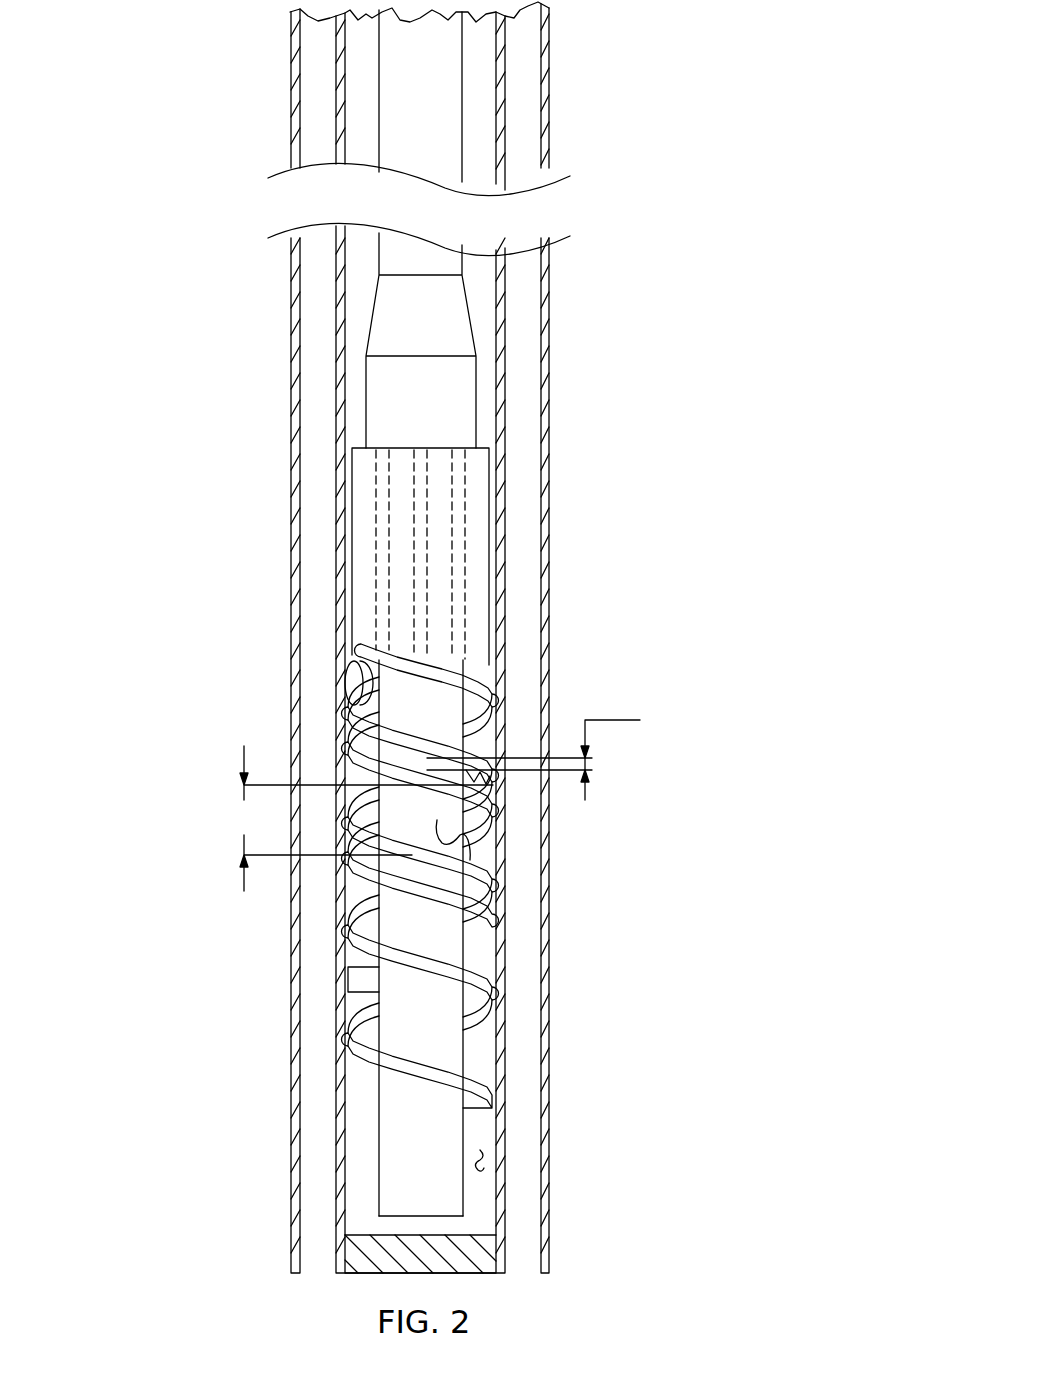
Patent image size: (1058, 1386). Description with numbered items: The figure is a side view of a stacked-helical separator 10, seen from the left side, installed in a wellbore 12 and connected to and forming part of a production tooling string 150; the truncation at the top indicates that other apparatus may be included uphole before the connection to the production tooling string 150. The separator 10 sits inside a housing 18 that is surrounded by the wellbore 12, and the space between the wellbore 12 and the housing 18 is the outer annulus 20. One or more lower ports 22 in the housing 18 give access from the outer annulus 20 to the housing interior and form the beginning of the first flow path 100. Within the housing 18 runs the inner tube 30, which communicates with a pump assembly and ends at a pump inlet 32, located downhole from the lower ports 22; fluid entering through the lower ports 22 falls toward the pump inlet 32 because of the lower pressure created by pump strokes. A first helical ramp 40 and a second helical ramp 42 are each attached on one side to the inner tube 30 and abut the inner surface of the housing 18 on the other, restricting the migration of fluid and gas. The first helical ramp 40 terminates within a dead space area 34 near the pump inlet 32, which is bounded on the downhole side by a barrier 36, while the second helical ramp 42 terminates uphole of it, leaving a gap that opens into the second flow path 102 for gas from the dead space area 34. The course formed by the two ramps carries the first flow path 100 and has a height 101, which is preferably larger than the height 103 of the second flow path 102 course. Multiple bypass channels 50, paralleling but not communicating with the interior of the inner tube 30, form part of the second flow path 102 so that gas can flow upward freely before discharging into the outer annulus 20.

The stacked-helical separator 10 is at (692, 752).
The wellbore 12 is at (550, 556).
The housing 18 is at (507, 692).
The outer annulus 20 is at (323, 489).
The lower ports 22 is at (350, 684).
The inner tube 30 is at (420, 1030).
The pump inlet 32 is at (413, 1220).
The dead space area 34 is at (480, 1150).
The barrier 36 is at (470, 1243).
The first helical ramp 40 is at (490, 992).
The second helical ramp 42 is at (350, 907).
The bypass channels 50 is at (455, 520).
The first flow path 100 is at (480, 842).
The height of the first flow path course 101 is at (360, 818).
The second flow path 102 is at (488, 782).
The height of the second flow path course 103 is at (533, 747).
The production tooling string 150 is at (433, 133).